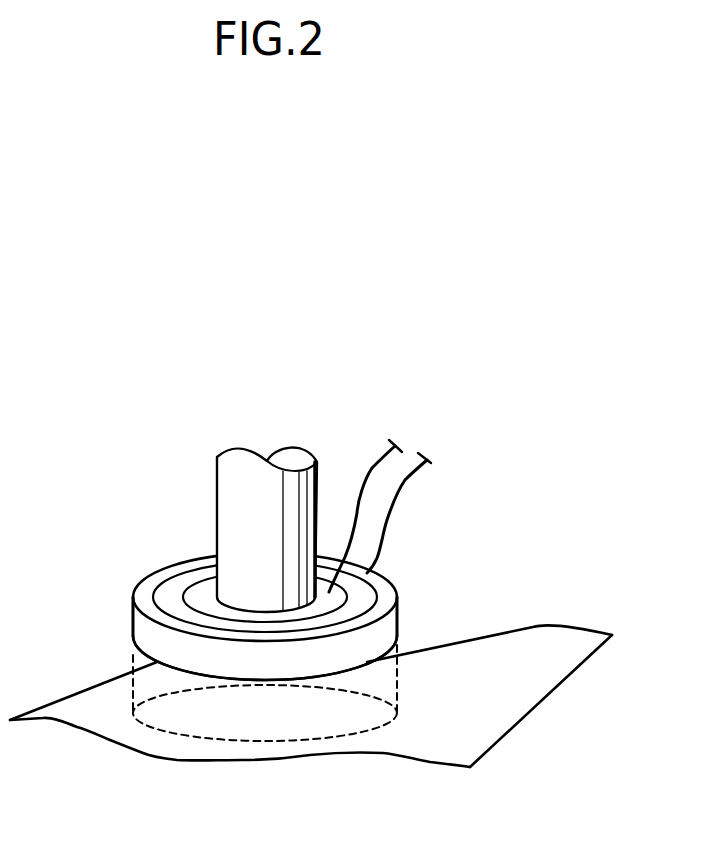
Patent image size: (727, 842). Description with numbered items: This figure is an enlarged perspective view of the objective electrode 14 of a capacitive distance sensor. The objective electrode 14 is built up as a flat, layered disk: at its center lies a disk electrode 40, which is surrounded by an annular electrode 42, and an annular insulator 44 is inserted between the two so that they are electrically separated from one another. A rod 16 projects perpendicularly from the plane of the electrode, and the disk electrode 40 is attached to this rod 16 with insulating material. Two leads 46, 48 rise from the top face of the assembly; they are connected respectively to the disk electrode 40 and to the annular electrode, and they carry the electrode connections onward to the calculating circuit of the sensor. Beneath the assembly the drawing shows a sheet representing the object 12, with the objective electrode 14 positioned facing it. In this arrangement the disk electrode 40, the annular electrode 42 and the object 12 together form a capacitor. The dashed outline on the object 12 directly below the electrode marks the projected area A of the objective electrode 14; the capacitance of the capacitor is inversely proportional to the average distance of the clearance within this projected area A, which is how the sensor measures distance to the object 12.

The object 12 is at (515, 645).
The objective electrode 14 is at (408, 590).
The rod 16 is at (235, 487).
The disk electrode 40 is at (205, 593).
The annular electrode 42 is at (145, 595).
The annular insulator 44 is at (170, 595).
The lead 46 is at (372, 468).
The lead 48 is at (410, 472).
The projected area A is at (177, 735).